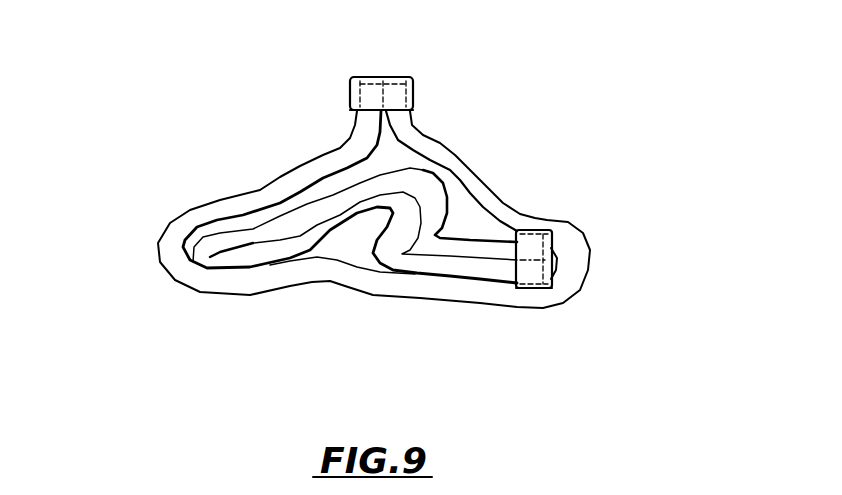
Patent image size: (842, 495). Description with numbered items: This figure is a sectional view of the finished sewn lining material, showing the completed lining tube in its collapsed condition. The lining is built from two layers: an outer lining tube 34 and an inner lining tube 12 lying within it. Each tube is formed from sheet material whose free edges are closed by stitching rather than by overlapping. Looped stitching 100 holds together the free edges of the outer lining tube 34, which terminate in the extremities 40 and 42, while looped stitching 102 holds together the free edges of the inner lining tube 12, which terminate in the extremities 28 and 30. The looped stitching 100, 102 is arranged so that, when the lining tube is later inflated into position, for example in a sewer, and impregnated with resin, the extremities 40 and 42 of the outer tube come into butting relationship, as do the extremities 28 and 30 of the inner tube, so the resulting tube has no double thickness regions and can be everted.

The inner lining tube 12 is at (308, 207).
The extremity of the inner tube 28 is at (601, 238).
The extremity of the inner tube 30 is at (603, 269).
The outer lining tube 34 is at (321, 209).
The extremity of the outer tube 40 is at (306, 57).
The extremity of the outer tube 42 is at (435, 84).
The looped stitching 100 is at (299, 85).
The looped stitching 102 is at (535, 323).